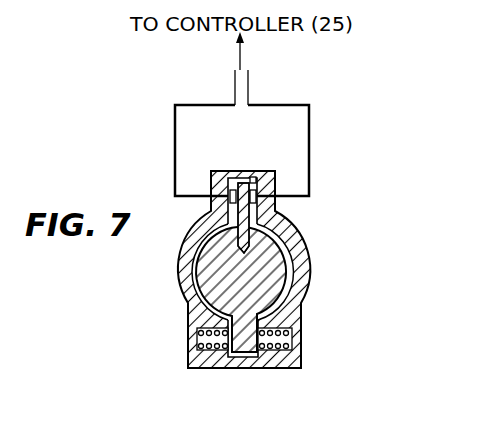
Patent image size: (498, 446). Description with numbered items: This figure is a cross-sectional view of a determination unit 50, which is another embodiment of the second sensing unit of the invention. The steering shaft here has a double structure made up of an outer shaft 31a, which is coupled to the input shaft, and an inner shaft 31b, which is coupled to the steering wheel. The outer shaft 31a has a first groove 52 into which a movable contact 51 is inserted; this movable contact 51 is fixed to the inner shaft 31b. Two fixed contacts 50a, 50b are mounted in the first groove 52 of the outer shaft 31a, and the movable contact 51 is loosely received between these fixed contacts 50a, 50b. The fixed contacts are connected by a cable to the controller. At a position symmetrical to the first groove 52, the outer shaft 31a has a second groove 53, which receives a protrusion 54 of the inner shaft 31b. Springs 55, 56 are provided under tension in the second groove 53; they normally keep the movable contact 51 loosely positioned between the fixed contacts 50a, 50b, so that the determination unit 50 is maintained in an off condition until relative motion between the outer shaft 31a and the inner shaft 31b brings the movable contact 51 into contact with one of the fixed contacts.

The determination unit 50 is at (317, 201).
The fixed contact 50a is at (298, 212).
The fixed contact 50b is at (210, 203).
The movable contact 51 is at (240, 244).
The first groove 52 is at (253, 177).
The outer shaft 31a is at (296, 297).
The inner shaft 31b is at (270, 267).
The second groove 53 is at (284, 335).
The protrusion 54 is at (231, 362).
The spring 55 is at (290, 349).
The spring 56 is at (203, 355).